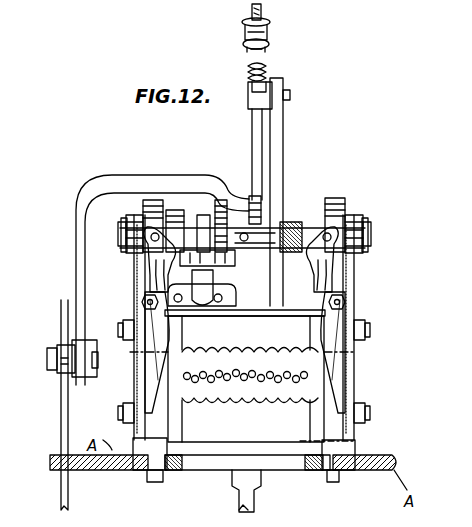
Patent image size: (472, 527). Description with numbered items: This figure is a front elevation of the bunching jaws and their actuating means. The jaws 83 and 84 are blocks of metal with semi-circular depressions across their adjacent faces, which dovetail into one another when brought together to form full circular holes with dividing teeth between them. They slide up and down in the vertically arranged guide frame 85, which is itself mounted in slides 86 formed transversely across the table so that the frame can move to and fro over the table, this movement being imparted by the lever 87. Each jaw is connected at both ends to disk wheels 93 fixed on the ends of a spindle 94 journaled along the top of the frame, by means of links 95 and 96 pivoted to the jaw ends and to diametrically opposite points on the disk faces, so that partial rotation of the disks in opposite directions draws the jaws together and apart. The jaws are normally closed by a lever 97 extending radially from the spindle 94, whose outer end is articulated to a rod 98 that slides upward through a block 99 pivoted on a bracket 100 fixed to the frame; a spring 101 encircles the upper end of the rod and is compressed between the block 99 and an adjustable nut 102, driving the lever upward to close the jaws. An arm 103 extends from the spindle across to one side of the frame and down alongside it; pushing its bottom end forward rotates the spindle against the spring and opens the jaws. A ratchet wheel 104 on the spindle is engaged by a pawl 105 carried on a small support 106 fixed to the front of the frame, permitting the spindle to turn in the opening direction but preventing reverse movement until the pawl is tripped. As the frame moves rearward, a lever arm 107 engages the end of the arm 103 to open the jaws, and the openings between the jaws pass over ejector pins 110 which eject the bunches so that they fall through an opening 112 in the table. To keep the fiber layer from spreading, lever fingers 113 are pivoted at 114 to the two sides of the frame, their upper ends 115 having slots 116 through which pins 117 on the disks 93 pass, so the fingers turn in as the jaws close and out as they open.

The jaw 83 is at (250, 341).
The jaw 84 is at (250, 415).
The guide frame 85 is at (306, 292).
The slides 86 is at (138, 470).
The lever 87 is at (240, 494).
The disk wheels 93 is at (152, 198).
The spindle 94 is at (292, 222).
The link 95 is at (148, 276).
The link 96 is at (140, 365).
The lever 97 is at (252, 198).
The rod 98 is at (253, 130).
The block 99 is at (262, 100).
The bracket 100 is at (284, 135).
The spring 101 is at (269, 45).
The adjustable nut 102 is at (271, 24).
The arm 103 is at (203, 182).
The ratchet wheel 104 is at (189, 222).
The pawl 105 is at (226, 247).
The support 106 is at (202, 278).
The lever arm 107 is at (64, 345).
The ejector pins 110 is at (215, 383).
The opening 112 is at (278, 467).
The lever fingers 113 is at (150, 350).
The pivot 114 is at (143, 302).
The upper ends 115 is at (143, 260).
The slots 116 is at (127, 243).
The pins 117 is at (130, 218).